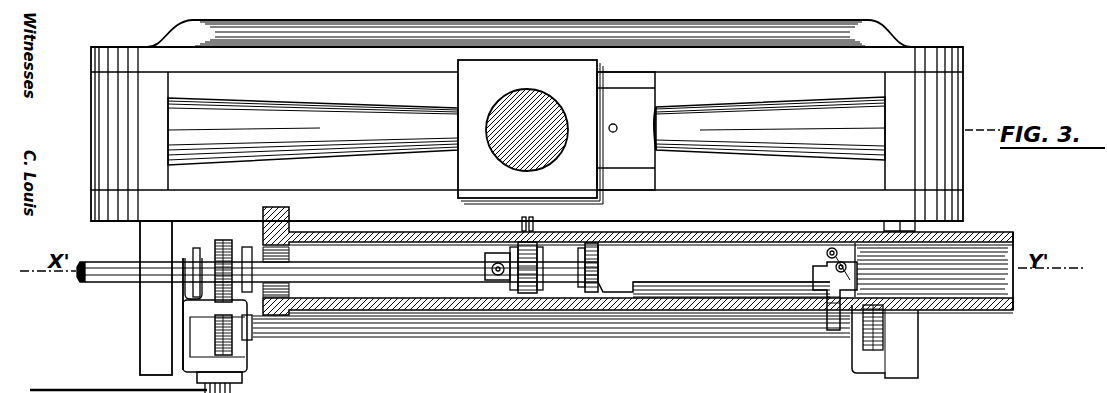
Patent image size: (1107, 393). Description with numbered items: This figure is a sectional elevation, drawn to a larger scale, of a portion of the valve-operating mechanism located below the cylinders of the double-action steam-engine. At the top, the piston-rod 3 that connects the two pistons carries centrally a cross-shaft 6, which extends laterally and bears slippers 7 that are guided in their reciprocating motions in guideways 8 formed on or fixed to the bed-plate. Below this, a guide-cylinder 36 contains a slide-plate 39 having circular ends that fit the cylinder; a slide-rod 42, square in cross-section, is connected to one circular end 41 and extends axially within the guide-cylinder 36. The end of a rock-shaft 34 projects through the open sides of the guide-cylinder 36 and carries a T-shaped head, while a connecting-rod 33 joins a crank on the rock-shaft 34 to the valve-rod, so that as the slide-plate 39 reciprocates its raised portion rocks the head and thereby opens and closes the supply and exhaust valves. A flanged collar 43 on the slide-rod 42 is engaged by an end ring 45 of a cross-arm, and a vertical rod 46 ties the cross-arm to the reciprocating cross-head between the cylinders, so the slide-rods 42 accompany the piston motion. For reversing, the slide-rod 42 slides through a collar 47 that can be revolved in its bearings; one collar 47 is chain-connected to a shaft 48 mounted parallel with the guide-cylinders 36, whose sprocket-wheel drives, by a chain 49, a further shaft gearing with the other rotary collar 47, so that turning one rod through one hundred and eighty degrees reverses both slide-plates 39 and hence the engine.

The piston-rod 3 is at (322, 92).
The cross-shaft 6 is at (512, 104).
The slippers 7 is at (556, 132).
The guideways 8 is at (527, 125).
The connecting-rod 33 is at (1003, 212).
The rock-shaft 34 is at (822, 259).
The guide-cylinder 36 is at (650, 233).
The slide-plate 39 is at (686, 292).
The circular end 41 is at (598, 259).
The slide-rod 42 is at (322, 266).
The flanged collar 43 is at (500, 283).
The end ring 45 is at (533, 296).
The vertical rod 46 is at (521, 228).
The collar 47 is at (203, 257).
The shaft 48 is at (353, 323).
The chain 49 is at (903, 336).